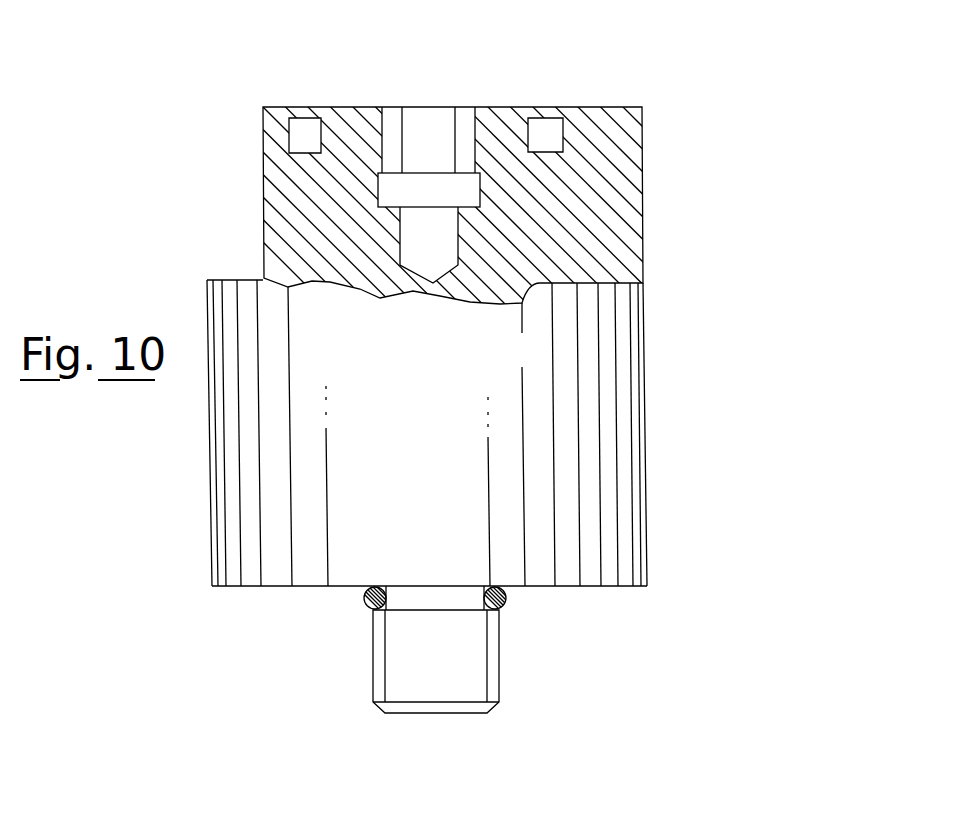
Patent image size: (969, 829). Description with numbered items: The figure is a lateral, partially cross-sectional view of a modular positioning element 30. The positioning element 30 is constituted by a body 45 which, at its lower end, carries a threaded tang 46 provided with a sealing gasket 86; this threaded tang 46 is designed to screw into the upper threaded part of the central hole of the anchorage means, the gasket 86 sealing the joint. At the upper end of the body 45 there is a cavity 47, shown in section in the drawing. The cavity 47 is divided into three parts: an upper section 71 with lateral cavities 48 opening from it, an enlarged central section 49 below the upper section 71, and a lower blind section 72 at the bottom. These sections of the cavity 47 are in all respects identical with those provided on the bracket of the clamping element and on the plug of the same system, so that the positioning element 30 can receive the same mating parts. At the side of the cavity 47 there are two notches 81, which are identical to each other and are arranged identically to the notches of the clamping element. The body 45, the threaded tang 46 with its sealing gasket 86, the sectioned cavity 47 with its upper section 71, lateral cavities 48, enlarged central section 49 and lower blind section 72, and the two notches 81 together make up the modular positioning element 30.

The positioning element 30 is at (672, 298).
The body 45 is at (620, 440).
The threaded tang 46 is at (460, 651).
The cavity 47 is at (435, 100).
The lateral cavities 48 is at (390, 128).
The enlarged central section 49 is at (380, 190).
The upper section 71 is at (443, 127).
The lower blind section 72 is at (470, 253).
The notches 81 is at (298, 127).
The sealing gasket 86 is at (505, 602).